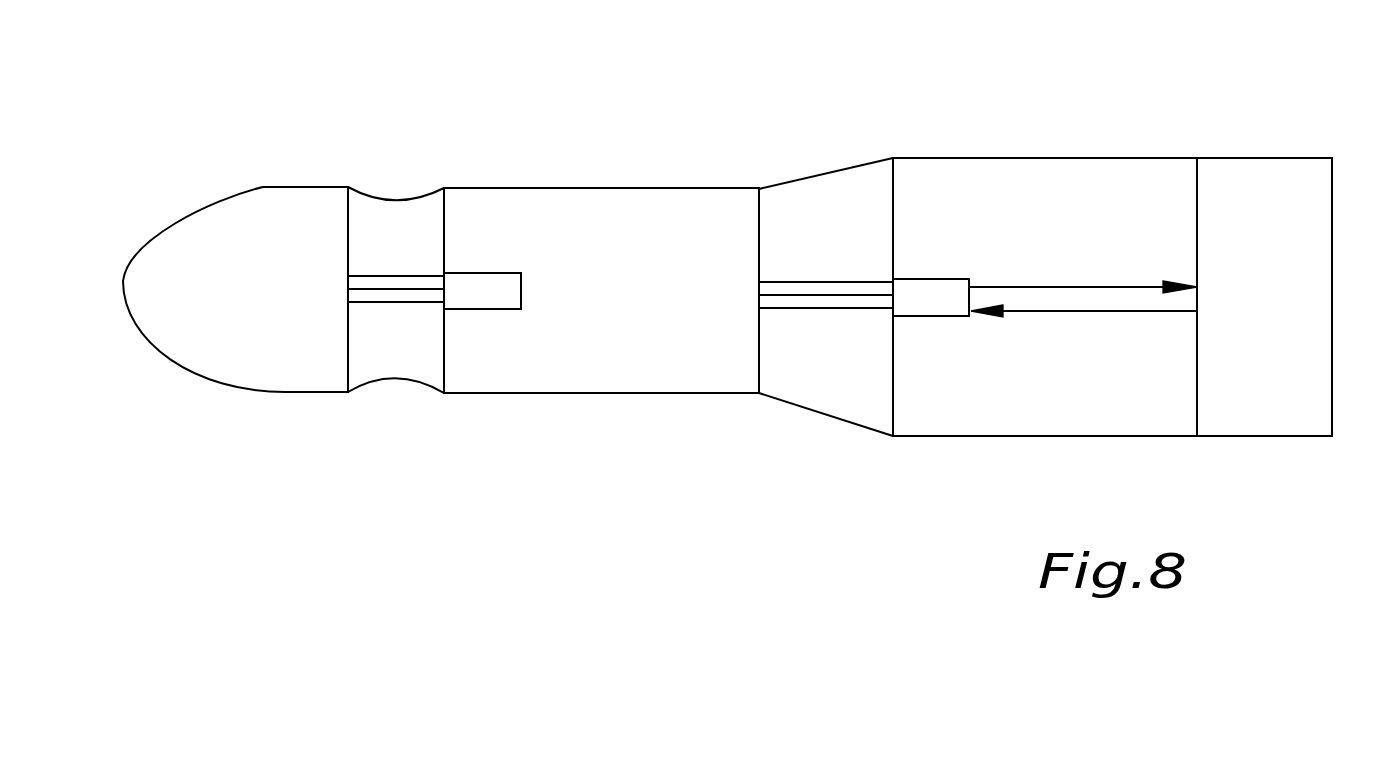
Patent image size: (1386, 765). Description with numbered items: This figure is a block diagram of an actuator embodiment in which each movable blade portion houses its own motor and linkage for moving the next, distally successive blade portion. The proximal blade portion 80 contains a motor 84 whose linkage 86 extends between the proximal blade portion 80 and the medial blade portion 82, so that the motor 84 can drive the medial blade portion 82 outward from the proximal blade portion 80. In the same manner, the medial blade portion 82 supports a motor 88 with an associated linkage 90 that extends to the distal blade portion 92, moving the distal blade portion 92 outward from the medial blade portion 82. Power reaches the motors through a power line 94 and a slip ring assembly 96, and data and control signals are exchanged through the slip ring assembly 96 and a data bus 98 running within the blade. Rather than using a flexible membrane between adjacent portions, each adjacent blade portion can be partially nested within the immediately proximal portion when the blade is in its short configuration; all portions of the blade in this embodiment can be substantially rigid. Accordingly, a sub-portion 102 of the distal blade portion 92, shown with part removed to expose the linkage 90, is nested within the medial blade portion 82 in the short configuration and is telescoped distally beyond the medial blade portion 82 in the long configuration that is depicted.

The proximal blade portion 80 is at (965, 167).
The medial blade portion 82 is at (608, 205).
The motor 84 is at (930, 285).
The linkage 86 is at (812, 290).
The motor 88 is at (498, 283).
The linkage 90 is at (393, 283).
The distal blade portion 92 is at (302, 200).
The power line 94 is at (1020, 320).
The slip ring assembly 96 is at (1277, 182).
The data bus 98 is at (1132, 287).
The sub-portion 102 is at (375, 363).